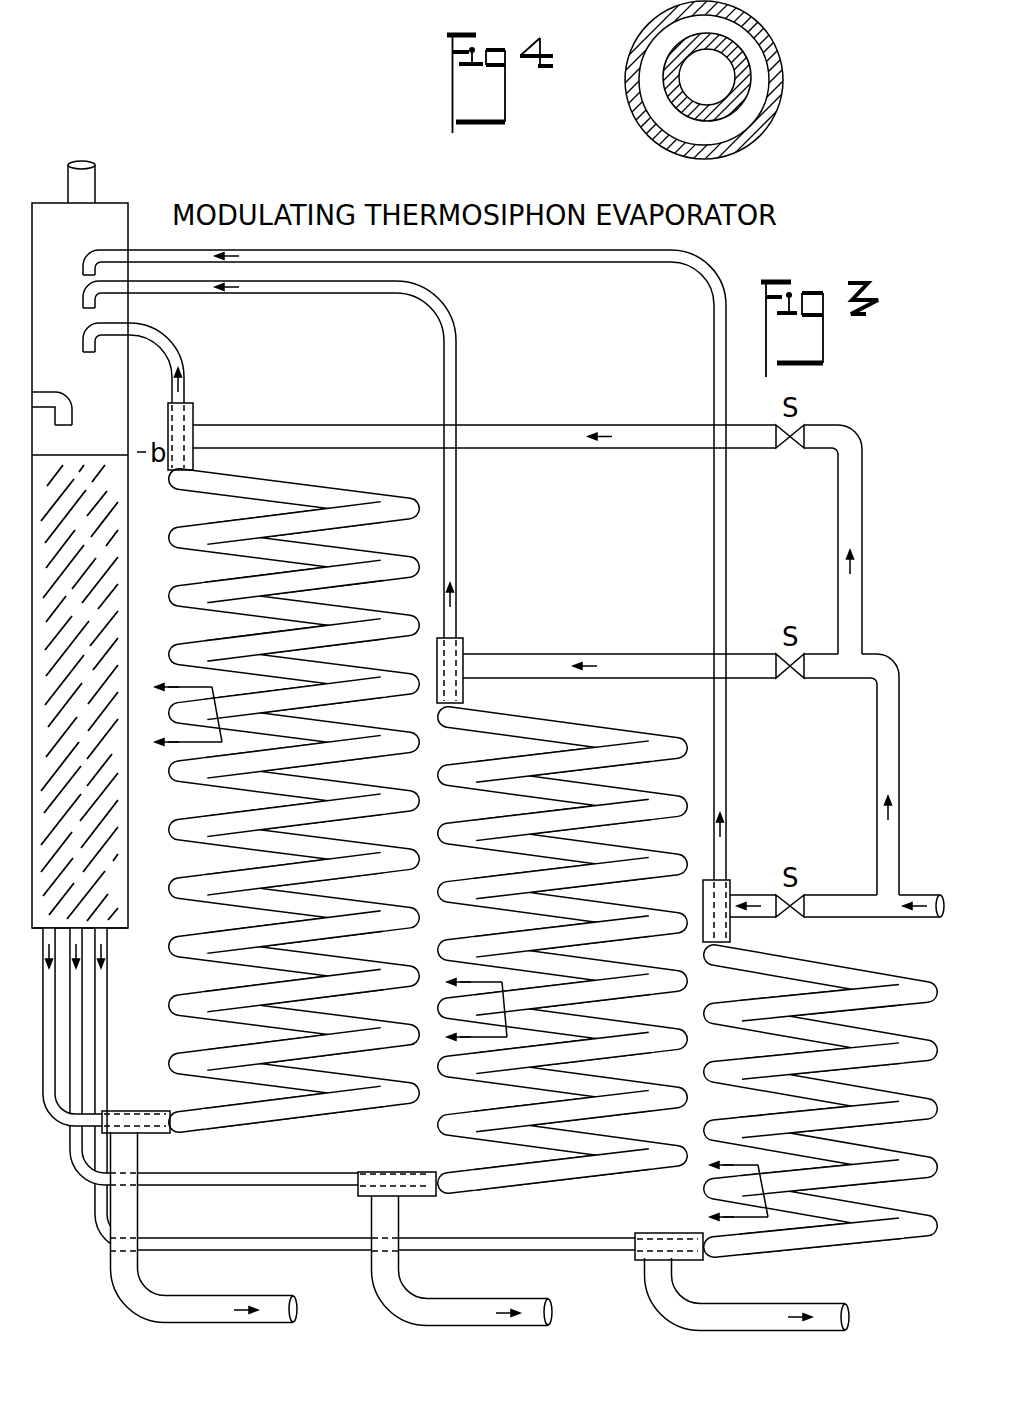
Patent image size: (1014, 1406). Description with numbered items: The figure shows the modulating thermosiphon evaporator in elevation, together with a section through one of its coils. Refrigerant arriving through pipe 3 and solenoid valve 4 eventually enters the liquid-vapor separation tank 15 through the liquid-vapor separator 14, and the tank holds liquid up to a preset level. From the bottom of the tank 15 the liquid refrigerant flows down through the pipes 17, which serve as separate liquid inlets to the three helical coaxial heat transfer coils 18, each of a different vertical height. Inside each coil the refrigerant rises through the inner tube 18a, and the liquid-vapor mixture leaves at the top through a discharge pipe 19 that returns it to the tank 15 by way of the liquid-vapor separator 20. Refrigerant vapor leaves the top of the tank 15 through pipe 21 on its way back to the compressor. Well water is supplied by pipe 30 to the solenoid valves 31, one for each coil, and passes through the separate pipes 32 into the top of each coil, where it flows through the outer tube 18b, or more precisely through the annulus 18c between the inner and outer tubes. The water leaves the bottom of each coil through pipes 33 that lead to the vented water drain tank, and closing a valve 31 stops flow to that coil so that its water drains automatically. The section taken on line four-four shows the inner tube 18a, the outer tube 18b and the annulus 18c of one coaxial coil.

In FIG. 3, the pipe 3 is at (864, 578).
In FIG. 3, the solenoid valve 4 is at (450, 957).
In FIG. 3, the liquid-vapor separator 14 is at (74, 412).
In FIG. 3, the liquid-vapor separation tank 15 is at (128, 598).
In FIG. 3, the pipes 17 is at (55, 1000).
In FIG. 3, the coaxial heat transfer coils 18 is at (293, 1124).
In FIG. 4, the inner tube 18a is at (750, 86).
In FIG. 4, the outer tube 18b is at (782, 62).
In FIG. 4, the annulus 18c is at (745, 118).
In FIG. 3, the discharge pipe 19 is at (187, 343).
In FIG. 3, the liquid-vapor separator 20 is at (84, 343).
In FIG. 3, the pipe 21 is at (97, 178).
In FIG. 3, the pipe 30 is at (944, 872).
In FIG. 3, the solenoid valves 31 is at (790, 449).
In FIG. 3, the pipes 32 is at (546, 425).
In FIG. 3, the pipes 33 is at (242, 1324).